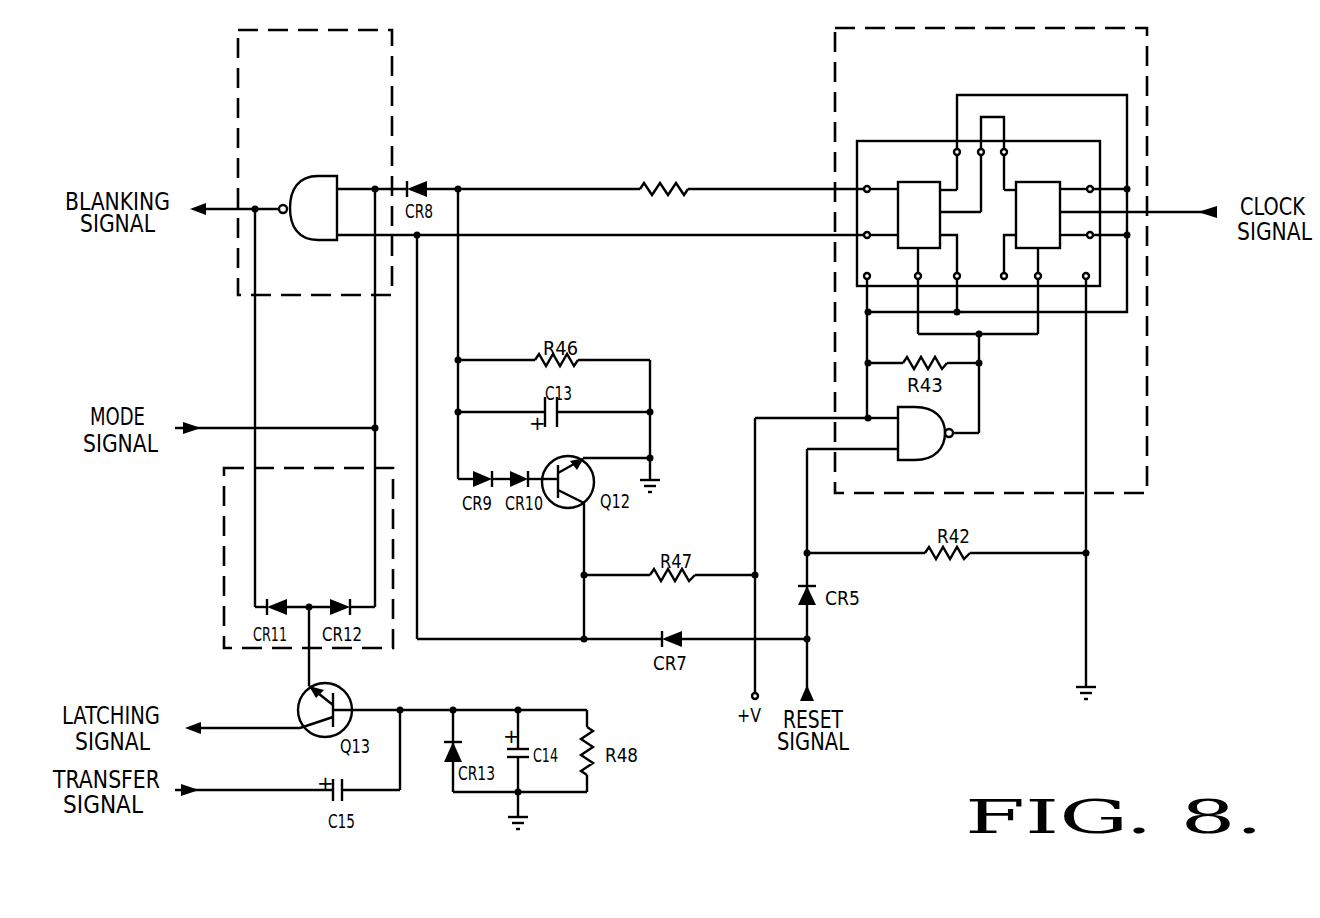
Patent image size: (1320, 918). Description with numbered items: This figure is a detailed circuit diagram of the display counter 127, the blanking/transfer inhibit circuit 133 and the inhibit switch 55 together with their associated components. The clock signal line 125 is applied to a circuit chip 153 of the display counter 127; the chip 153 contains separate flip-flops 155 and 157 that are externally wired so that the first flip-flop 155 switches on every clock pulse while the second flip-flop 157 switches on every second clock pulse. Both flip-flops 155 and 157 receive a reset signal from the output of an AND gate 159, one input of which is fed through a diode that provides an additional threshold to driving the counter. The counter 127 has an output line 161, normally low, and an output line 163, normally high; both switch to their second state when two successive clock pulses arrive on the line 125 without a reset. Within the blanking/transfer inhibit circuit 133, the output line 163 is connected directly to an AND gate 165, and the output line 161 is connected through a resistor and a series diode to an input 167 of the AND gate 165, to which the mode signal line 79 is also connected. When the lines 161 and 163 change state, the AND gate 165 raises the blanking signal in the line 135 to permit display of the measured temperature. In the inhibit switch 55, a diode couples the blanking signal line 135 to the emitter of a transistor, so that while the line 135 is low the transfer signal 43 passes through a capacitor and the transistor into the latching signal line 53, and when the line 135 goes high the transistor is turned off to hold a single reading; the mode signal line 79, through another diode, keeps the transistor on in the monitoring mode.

The blanking/transfer inhibit circuit 133 is at (324, 151).
The AND gate 165 is at (316, 240).
The input of the AND gate 167 is at (360, 189).
The blanking signal line 135 is at (243, 211).
The output line 161 is at (751, 189).
The output line 163 is at (740, 235).
The mode signal line 79 is at (228, 426).
The inhibit switch 55 is at (318, 566).
The latching signal line 53 is at (238, 727).
The transfer signal 43 is at (250, 792).
The display counter 127 is at (920, 111).
The circuit chip 153 is at (1070, 179).
The second flip-flop 157 is at (933, 234).
The first flip-flop 155 is at (1052, 234).
The clock signal line 125 is at (1177, 212).
The AND gate 159 is at (920, 460).